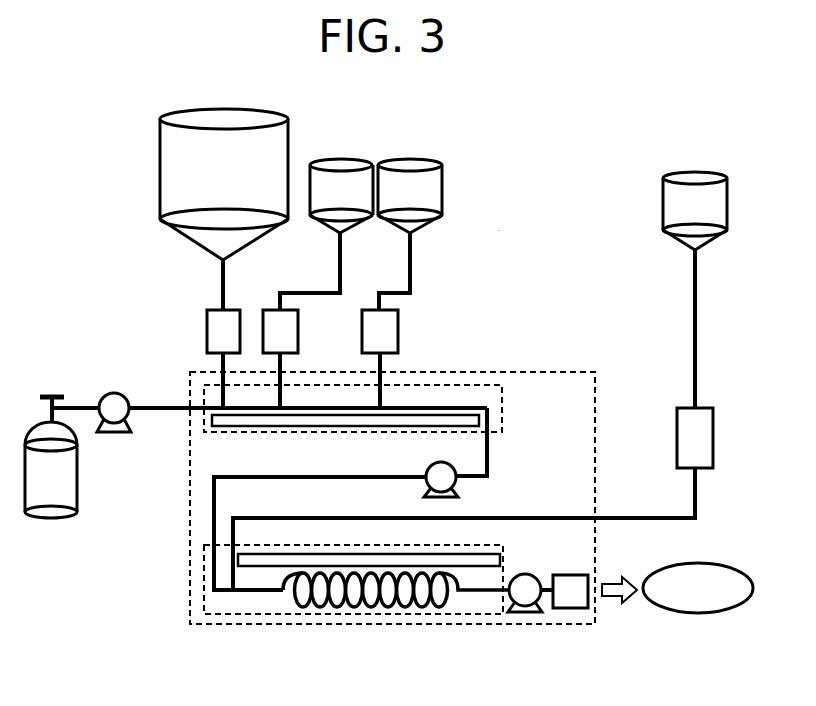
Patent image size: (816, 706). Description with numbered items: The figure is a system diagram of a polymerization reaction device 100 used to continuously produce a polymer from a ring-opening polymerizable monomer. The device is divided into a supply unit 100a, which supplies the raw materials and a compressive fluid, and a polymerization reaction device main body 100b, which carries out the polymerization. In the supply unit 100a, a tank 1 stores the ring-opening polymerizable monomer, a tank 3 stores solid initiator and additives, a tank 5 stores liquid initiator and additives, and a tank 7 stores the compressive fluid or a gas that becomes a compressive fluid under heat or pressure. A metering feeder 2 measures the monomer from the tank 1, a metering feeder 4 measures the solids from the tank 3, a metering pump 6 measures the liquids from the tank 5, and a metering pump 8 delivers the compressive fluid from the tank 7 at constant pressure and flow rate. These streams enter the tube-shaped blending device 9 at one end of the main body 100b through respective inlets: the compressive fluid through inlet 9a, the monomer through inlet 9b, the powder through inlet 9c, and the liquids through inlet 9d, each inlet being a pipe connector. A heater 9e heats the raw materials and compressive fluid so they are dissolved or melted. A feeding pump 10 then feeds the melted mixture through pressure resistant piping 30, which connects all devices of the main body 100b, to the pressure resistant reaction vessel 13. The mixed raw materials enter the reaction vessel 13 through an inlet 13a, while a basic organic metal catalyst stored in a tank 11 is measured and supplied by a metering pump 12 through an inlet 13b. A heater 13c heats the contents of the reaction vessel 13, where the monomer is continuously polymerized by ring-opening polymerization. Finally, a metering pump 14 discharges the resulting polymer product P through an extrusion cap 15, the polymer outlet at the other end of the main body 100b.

The tank 1 is at (225, 117).
The metering feeder 2 is at (238, 309).
The tank 3 is at (341, 163).
The metering feeder 4 is at (299, 330).
The tank 5 is at (411, 163).
The metering pump 6 is at (399, 330).
The tank 7 is at (78, 480).
The metering pump 8 is at (114, 393).
The blending device 9 is at (477, 384).
The inlet 9a is at (202, 407).
The inlet 9b is at (221, 383).
The inlet 9c is at (282, 383).
The inlet 9d is at (382, 383).
The heater 9e is at (258, 427).
The feeding pump 10 is at (459, 496).
The tank 11 is at (700, 176).
The metering pump 12 is at (700, 408).
The reaction vessel 13 is at (352, 615).
The inlet 13a is at (210, 543).
The inlet 13b is at (231, 544).
The heater 13c is at (502, 556).
The metering pump 14 is at (525, 613).
The extrusion cap 15 is at (587, 574).
The pressure resistant piping 30 is at (345, 475).
The polymerization reaction device 100 is at (500, 115).
The supply unit 100a is at (513, 238).
The polymerization reaction device main body 100b is at (470, 625).
The polymer product P is at (716, 565).